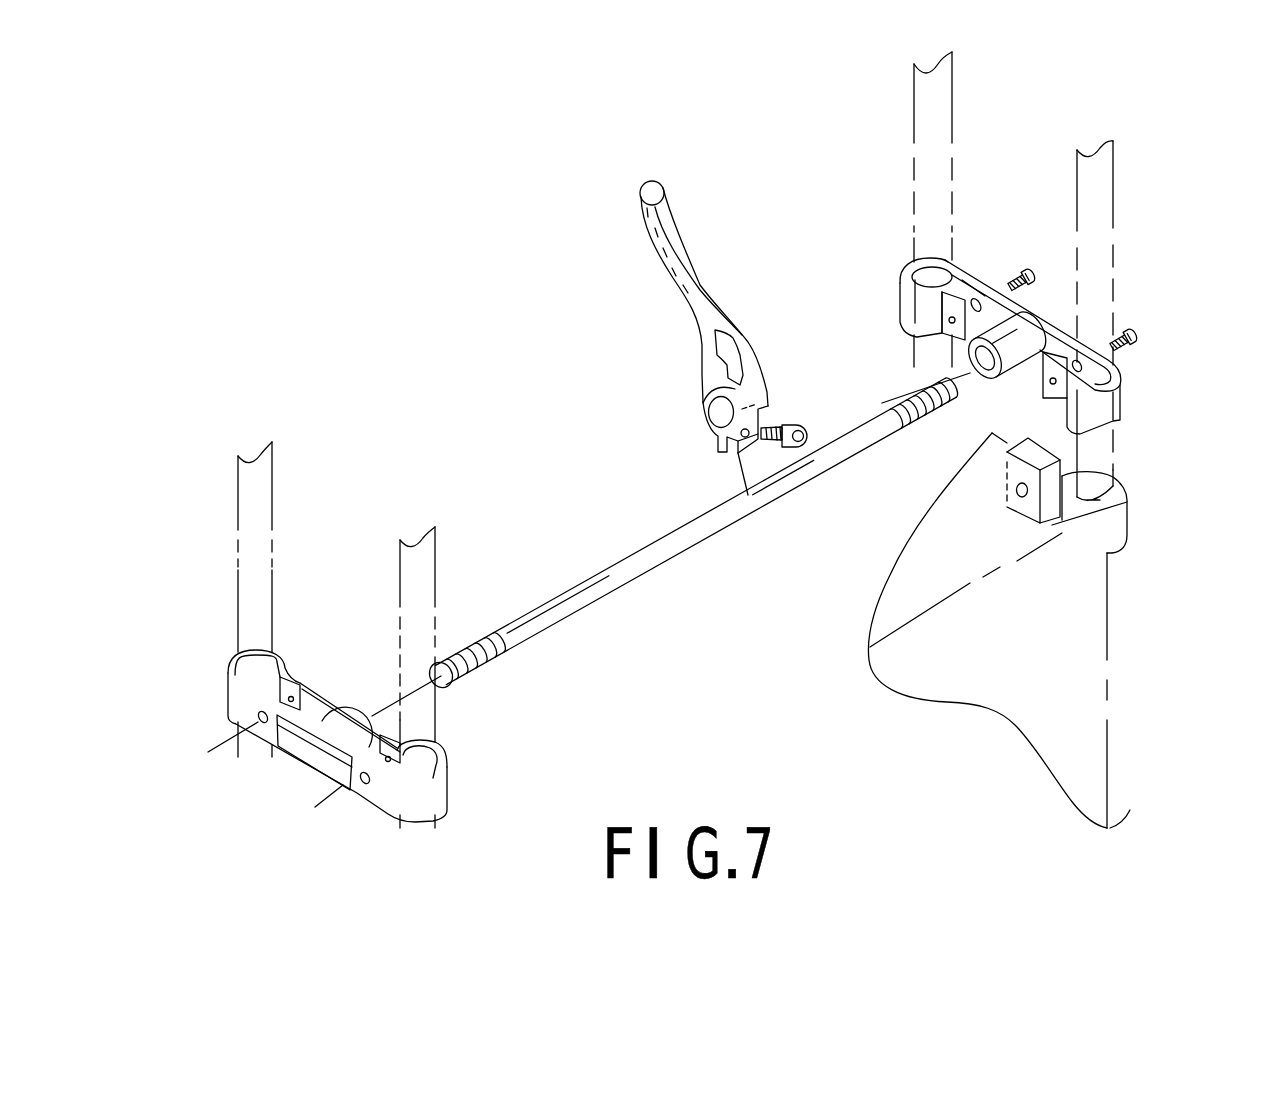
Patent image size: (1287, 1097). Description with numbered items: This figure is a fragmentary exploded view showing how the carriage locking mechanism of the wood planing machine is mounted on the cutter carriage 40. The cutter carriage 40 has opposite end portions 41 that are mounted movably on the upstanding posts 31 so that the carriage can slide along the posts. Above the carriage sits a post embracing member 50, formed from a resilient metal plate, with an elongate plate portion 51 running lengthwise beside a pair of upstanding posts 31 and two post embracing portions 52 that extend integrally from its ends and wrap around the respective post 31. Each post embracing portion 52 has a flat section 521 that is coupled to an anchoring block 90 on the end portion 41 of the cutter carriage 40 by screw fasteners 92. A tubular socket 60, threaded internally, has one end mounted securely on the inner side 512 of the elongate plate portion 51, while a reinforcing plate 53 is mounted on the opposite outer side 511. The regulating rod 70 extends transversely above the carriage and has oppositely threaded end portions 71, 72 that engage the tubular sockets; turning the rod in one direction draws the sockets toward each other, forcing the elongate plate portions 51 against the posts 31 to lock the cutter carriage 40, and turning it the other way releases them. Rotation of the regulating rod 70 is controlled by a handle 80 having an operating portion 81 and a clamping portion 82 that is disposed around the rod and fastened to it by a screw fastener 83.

The upstanding posts 31 is at (935, 125).
The cutter carriage 40 is at (1108, 742).
The end portions 41 is at (1115, 528).
The post embracing member 50 is at (955, 262).
The elongate plate portion 51 is at (993, 307).
The post embracing portions 52 is at (912, 270).
The outer side 511 is at (1048, 317).
The inner side 512 is at (1060, 340).
The flat section 521 is at (1056, 384).
The reinforcing plate 53 is at (310, 762).
The tubular socket 60 is at (1006, 376).
The regulating rod 70 is at (568, 587).
The end portion 71 is at (892, 402).
The end portion 72 is at (488, 642).
The handle 80 is at (669, 223).
The operating portion 81 is at (673, 259).
The clamping portion 82 is at (754, 374).
The screw fastener 83 is at (790, 426).
The anchoring block 90 is at (1055, 525).
The screw fasteners 92 is at (1140, 334).